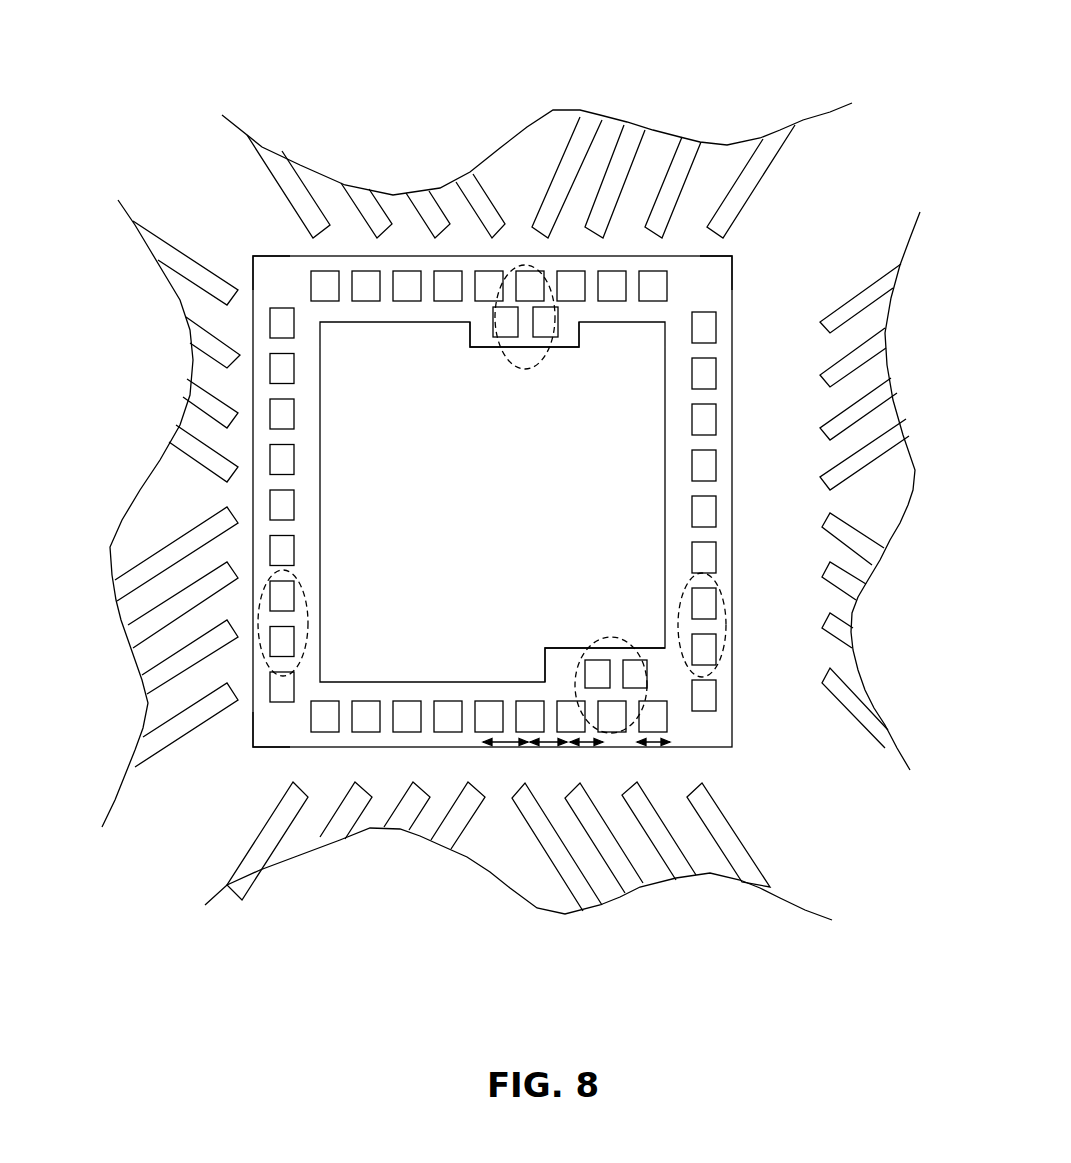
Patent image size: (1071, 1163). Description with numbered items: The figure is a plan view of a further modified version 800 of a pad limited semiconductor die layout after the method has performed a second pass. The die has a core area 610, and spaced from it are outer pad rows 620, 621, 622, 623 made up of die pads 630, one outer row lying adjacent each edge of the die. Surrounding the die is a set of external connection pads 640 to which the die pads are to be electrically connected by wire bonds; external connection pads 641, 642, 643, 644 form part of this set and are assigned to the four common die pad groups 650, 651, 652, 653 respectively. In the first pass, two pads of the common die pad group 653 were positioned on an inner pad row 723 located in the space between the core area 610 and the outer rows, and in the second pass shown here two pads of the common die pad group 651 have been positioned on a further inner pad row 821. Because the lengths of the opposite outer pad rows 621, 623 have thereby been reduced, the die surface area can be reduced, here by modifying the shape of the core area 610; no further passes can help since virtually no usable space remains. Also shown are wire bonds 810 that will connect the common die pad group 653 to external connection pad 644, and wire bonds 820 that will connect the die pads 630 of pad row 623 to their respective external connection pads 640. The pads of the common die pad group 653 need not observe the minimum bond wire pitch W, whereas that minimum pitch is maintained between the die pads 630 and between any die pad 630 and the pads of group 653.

The further modified version of the pad limited semiconductor die layout 800 is at (722, 32).
The core area 610 is at (492, 502).
The pad row 620 is at (494, 496).
The pad row 621 is at (692, 285).
The pad row 622 is at (263, 286).
The pad row 623 is at (265, 724).
The die pads 630 is at (317, 728).
The external connection pads 640 is at (562, 496).
The external connection pad 641 is at (842, 637).
The external connection pad 642 is at (600, 128).
The external connection pad 643 is at (167, 674).
The external connection pad 644 is at (677, 862).
The common die pad group 650 is at (697, 598).
The common die pad group 651 is at (545, 353).
The common die pad group 652 is at (308, 615).
The common die pad group 653 is at (583, 660).
The inner pad row 723 is at (552, 667).
The wire bonds 810 is at (637, 676).
The wire bonds 820 is at (528, 722).
The inner pad row 821 is at (470, 325).